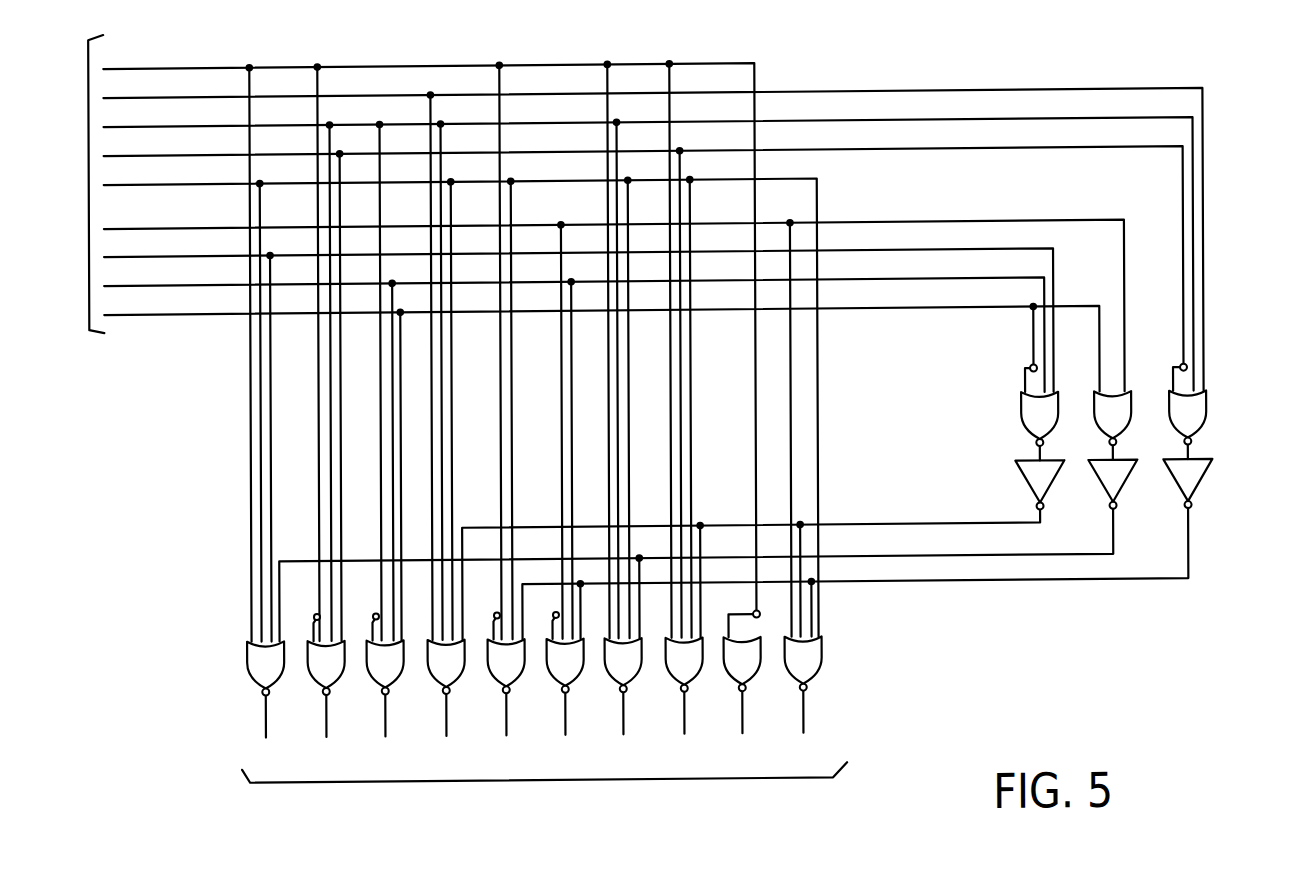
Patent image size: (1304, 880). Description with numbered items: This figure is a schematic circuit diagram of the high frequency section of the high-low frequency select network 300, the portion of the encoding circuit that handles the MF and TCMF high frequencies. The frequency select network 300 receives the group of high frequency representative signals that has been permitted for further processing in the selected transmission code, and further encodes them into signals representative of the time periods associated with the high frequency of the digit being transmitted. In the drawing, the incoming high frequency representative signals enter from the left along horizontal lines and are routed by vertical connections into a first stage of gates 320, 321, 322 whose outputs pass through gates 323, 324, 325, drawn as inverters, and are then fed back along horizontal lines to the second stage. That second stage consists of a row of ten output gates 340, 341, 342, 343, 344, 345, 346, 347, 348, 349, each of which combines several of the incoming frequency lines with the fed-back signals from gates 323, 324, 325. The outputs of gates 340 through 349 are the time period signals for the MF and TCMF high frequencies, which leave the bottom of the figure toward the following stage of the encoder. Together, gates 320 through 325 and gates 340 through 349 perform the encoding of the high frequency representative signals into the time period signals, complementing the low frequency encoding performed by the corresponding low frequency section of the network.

The high-low frequency select network 300 is at (619, 434).
The gate 320 is at (1020, 426).
The gate 321 is at (1093, 427).
The gate 322 is at (1169, 428).
The gate 323 is at (1024, 492).
The gate 324 is at (1095, 485).
The gate 325 is at (1169, 486).
The gate 340 is at (273, 678).
The gate 341 is at (334, 678).
The gate 342 is at (392, 678).
The gate 343 is at (454, 678).
The gate 344 is at (514, 678).
The gate 345 is at (572, 678).
The gate 346 is at (630, 678).
The gate 347 is at (692, 678).
The gate 348 is at (750, 678).
The gate 349 is at (810, 678).